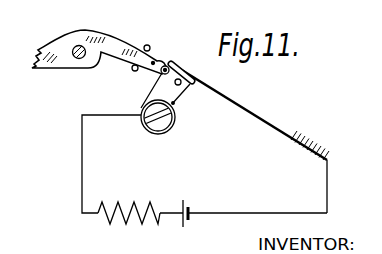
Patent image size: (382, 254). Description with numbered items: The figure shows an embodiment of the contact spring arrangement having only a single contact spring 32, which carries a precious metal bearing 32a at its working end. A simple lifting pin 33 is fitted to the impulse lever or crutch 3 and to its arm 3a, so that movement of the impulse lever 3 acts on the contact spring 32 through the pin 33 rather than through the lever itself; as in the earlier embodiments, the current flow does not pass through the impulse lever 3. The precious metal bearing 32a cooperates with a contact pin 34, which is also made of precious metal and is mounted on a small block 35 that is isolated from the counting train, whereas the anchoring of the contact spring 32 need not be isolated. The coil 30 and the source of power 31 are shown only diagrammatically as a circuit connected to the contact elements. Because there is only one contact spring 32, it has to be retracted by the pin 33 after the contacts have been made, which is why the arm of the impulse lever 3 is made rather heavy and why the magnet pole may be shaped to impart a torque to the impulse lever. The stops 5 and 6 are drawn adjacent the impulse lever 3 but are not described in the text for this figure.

The impulse lever 3 is at (113, 45).
The arm 3a is at (153, 63).
The stop pin 5 is at (132, 70).
The stop pin 6 is at (147, 45).
The coil 30 is at (129, 226).
The source of power 31 is at (186, 225).
The contact spring 32 is at (258, 118).
The precious metal bearing 32a is at (170, 66).
The lifting pin 33 is at (160, 75).
The contact pin 34 is at (181, 85).
The small block 35 is at (174, 104).